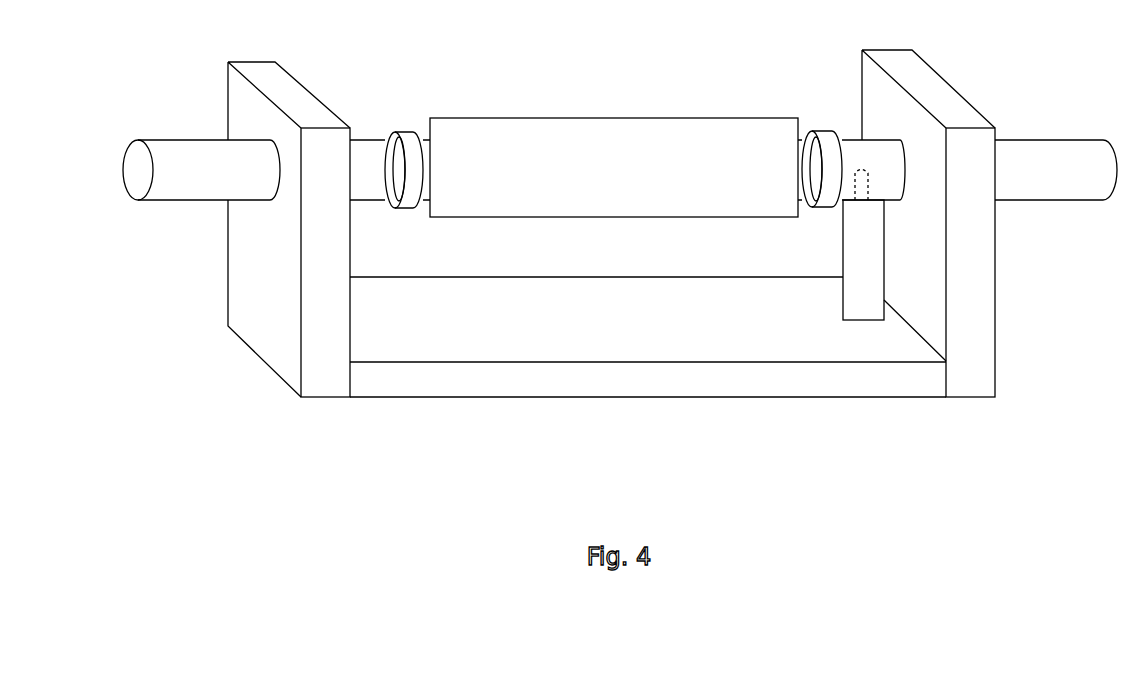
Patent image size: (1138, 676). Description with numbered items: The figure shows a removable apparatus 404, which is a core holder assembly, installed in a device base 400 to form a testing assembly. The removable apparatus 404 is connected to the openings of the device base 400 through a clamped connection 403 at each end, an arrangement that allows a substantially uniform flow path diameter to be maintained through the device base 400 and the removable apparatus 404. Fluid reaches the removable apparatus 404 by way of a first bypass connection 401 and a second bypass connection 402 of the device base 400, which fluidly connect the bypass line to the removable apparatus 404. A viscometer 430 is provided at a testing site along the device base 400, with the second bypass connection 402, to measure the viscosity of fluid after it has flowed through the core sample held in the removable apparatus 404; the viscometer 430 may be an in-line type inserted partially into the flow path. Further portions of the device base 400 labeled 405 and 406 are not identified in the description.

The device base 400 is at (196, 319).
The first bypass connection 401 is at (192, 153).
The second bypass connection 402 is at (1035, 147).
The clamped connection 403 is at (405, 128).
The removable apparatus 404 is at (614, 167).
The base 405 is at (303, 421).
The side plate 406 is at (280, 329).
The viscometer 430 is at (860, 295).